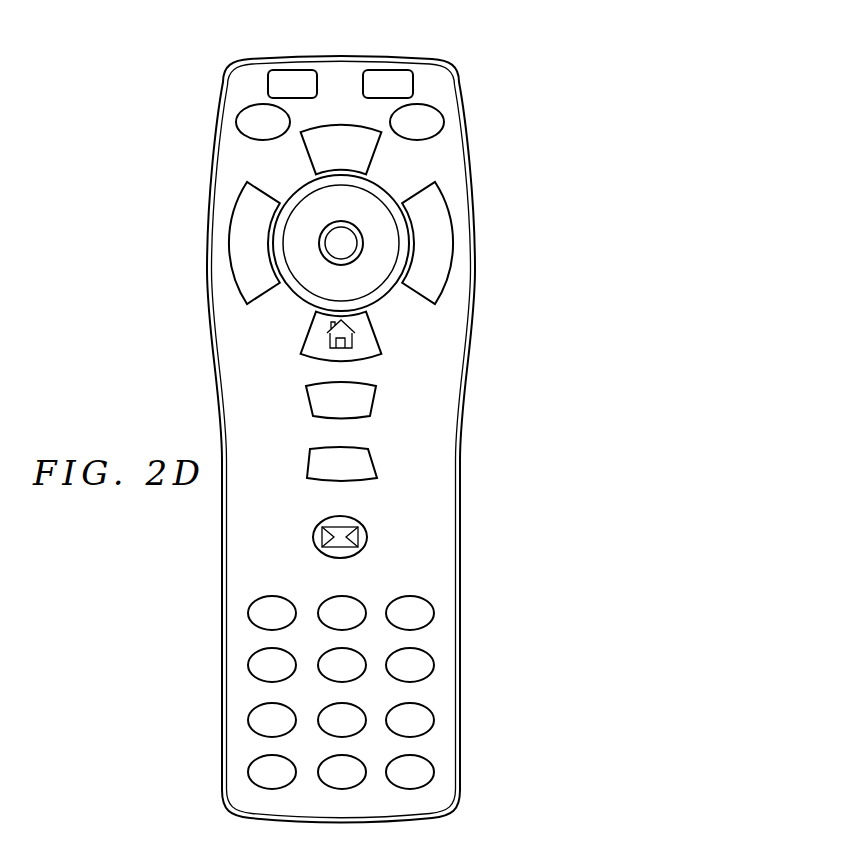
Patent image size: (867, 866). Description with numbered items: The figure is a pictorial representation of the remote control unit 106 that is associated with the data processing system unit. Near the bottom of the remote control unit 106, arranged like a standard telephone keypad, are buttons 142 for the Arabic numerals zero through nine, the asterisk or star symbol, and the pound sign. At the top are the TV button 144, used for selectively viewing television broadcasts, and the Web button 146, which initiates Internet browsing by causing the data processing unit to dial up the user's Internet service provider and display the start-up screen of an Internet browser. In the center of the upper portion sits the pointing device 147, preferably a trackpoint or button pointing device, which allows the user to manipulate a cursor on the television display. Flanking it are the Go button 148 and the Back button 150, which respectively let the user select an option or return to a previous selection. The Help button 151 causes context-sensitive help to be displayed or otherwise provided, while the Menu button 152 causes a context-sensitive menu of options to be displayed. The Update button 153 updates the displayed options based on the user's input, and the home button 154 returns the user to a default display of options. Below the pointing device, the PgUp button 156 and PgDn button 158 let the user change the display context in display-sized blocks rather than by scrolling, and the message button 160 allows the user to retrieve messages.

The remote control unit 106 is at (459, 485).
The buttons 142 is at (475, 597).
The TV button 144 is at (290, 70).
The Web button 146 is at (388, 70).
The pointing device 147 is at (347, 237).
The Go button 148 is at (455, 242).
The Back button 150 is at (230, 245).
The Help button 151 is at (237, 123).
The Menu button 152 is at (314, 130).
The Update button 153 is at (444, 122).
The home button 154 is at (304, 330).
The PgUp button 156 is at (373, 407).
The PgDn button 158 is at (308, 457).
The message button 160 is at (313, 533).